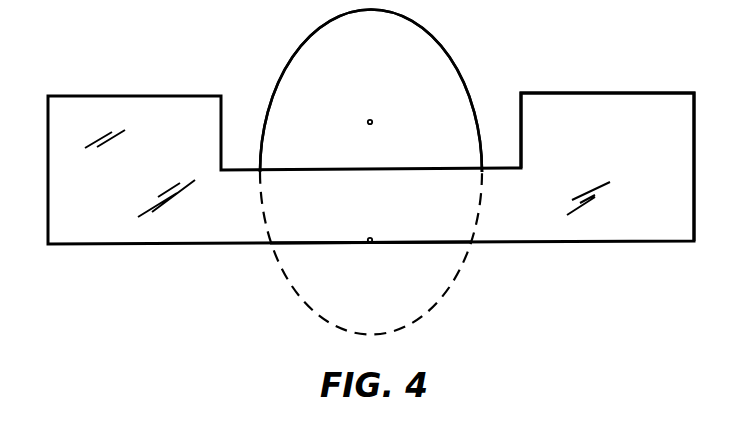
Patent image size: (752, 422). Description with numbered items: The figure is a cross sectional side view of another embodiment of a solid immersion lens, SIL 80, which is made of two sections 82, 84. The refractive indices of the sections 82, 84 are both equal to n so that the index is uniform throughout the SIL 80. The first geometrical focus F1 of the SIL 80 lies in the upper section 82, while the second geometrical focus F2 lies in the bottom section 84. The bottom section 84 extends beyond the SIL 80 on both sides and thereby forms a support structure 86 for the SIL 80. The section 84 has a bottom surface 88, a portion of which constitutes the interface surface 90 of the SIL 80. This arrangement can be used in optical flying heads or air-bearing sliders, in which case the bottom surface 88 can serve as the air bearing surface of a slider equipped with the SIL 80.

The SIL 80 is at (268, 63).
The section 82 is at (371, 91).
The bottom section 84 is at (371, 253).
The support structure 86 is at (640, 93).
The bottom surface 88 is at (535, 243).
The interface surface 90 is at (332, 245).
The first geometrical focus F1 is at (372, 121).
The second geometrical focus F2 is at (372, 239).